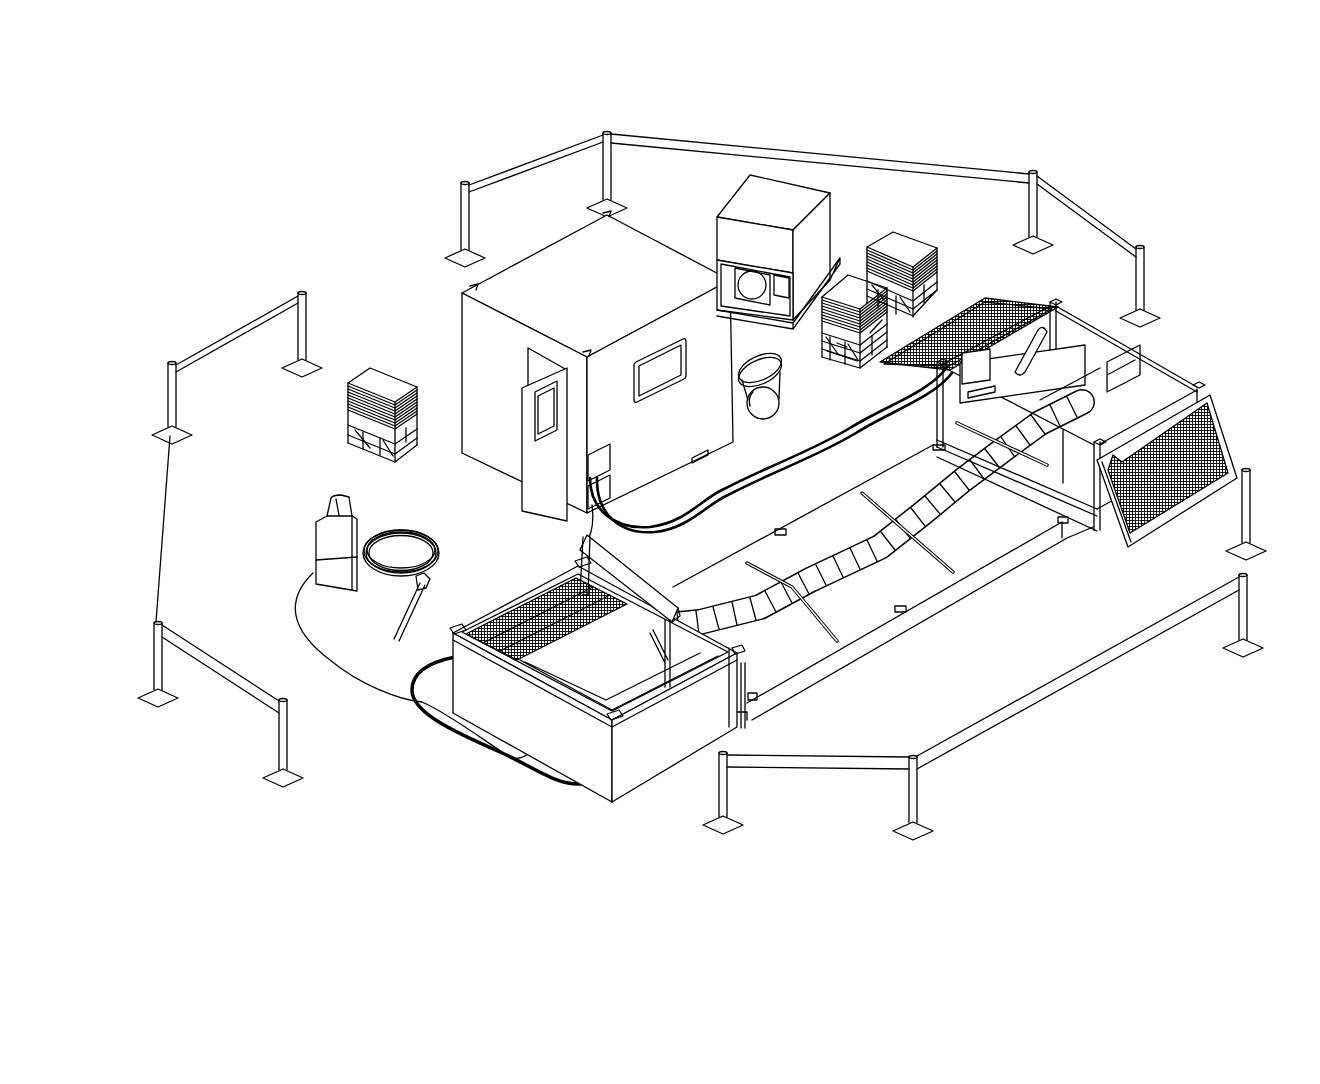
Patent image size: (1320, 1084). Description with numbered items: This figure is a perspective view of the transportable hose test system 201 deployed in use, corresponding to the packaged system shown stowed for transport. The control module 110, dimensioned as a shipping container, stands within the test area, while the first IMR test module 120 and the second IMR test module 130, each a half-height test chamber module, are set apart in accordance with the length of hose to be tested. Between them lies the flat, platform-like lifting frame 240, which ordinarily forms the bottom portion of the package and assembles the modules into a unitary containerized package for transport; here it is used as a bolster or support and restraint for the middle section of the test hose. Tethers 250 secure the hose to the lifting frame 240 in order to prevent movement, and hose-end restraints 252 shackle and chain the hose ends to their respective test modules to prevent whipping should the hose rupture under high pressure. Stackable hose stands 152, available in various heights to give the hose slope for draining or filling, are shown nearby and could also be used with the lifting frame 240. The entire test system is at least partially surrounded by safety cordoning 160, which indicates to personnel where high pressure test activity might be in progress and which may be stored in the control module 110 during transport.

The in-use hose test system 201 is at (992, 149).
The control module 110 is at (580, 247).
The hose stands 152 is at (897, 247).
The second IMR test module 130 is at (1127, 383).
The hose-end restraints 252 is at (1103, 403).
The lifting frame 240 is at (982, 543).
The tethers 250 is at (827, 618).
The safety cordoning 160 is at (1065, 702).
The first IMR test module 120 is at (556, 765).